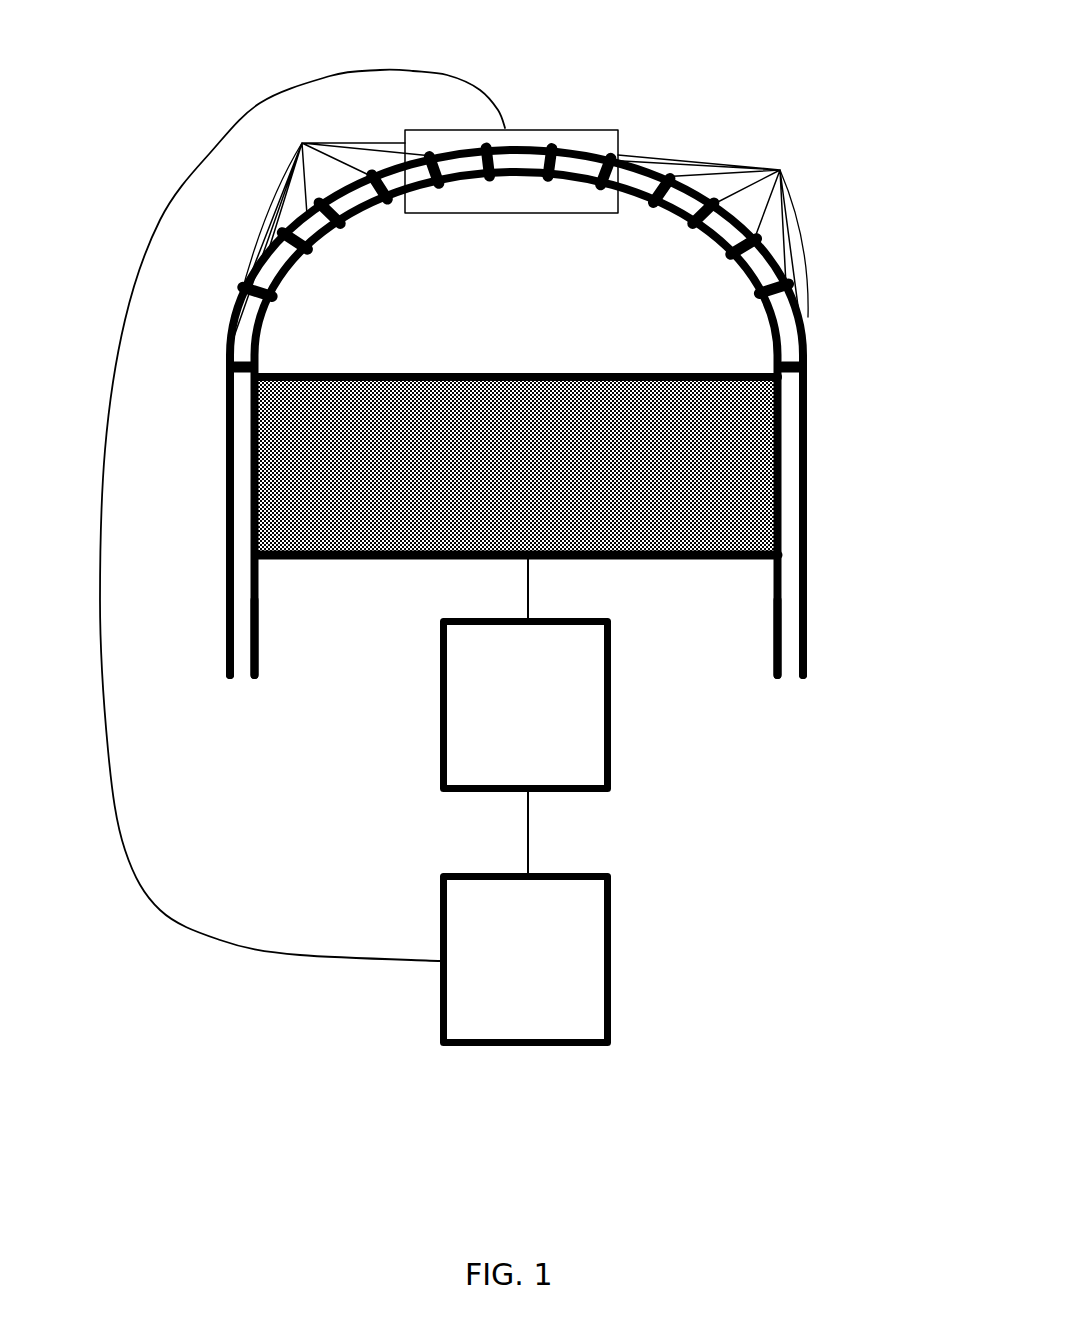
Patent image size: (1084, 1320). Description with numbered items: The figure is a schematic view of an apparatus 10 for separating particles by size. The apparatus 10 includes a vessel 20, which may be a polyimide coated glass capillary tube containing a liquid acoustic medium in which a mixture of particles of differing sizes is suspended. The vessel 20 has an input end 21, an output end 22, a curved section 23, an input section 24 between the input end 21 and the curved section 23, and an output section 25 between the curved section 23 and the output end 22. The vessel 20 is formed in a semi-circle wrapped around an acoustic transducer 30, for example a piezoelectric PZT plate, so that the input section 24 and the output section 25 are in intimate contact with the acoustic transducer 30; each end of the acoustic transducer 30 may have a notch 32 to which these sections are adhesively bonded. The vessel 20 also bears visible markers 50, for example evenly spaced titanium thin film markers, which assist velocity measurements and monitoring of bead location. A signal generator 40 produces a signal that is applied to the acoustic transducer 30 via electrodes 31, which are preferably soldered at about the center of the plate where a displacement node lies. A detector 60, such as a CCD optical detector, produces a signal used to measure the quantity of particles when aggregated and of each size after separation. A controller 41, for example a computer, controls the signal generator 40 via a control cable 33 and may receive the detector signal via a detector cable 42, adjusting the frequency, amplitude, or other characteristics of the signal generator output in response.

The apparatus for separating particles by size 10 is at (147, 70).
The vessel 20 is at (793, 590).
The input end 21 is at (788, 675).
The output end 22 is at (238, 678).
The curved section 23 is at (527, 162).
The input section 24 is at (785, 455).
The output section 25 is at (245, 442).
The acoustic transducer 30 is at (728, 502).
The electrodes 31 is at (537, 584).
The notch 32 is at (255, 480).
The control cable 33 is at (533, 840).
The signal generator 40 is at (569, 768).
The controller 41 is at (563, 1017).
The detector cable 42 is at (262, 948).
The visible markers 50 is at (533, 227).
The detector 60 is at (600, 143).